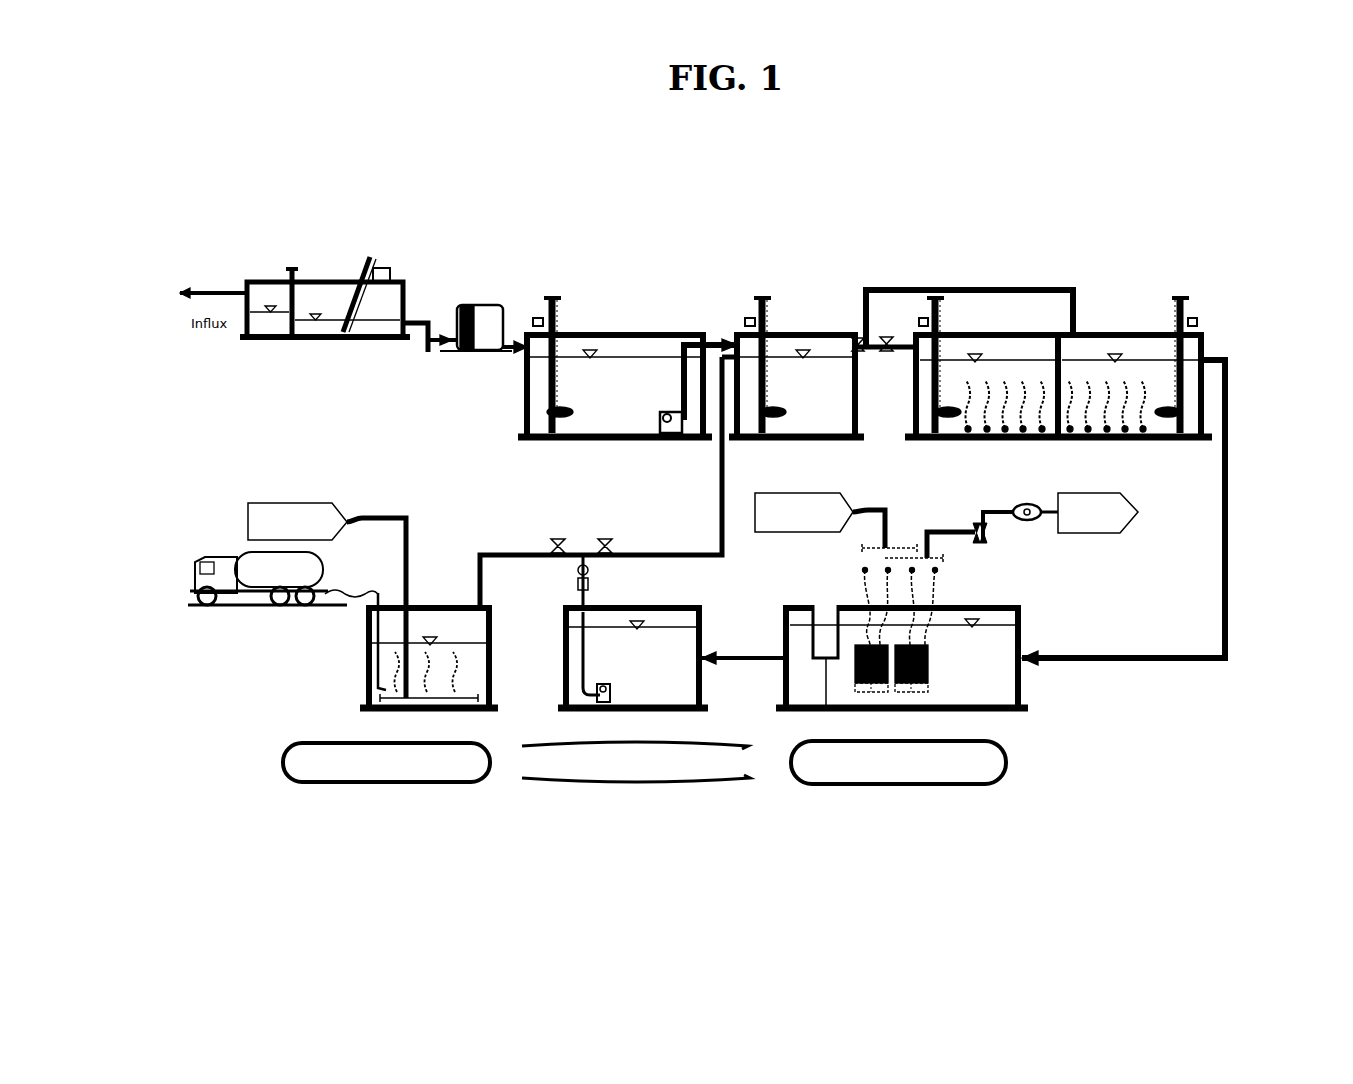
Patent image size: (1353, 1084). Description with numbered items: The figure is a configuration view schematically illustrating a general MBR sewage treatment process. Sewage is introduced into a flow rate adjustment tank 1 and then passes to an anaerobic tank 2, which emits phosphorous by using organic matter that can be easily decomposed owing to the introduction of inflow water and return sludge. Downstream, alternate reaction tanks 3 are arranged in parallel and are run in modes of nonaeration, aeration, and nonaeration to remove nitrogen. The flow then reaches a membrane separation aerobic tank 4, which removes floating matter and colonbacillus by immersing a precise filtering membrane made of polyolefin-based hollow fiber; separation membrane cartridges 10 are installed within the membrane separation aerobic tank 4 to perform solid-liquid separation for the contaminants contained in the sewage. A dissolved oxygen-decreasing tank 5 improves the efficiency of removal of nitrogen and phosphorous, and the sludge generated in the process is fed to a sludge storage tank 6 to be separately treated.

The flow rate adjustment tank 1 is at (583, 328).
The anaerobic tank 2 is at (832, 332).
The alternate reaction tanks 3 is at (1122, 333).
The membrane separation aerobic tank 4 is at (995, 687).
The dissolved oxygen-decreasing tank 5 is at (703, 678).
The sludge storage tank 6 is at (367, 668).
The separation membrane cartridges 10 is at (937, 677).